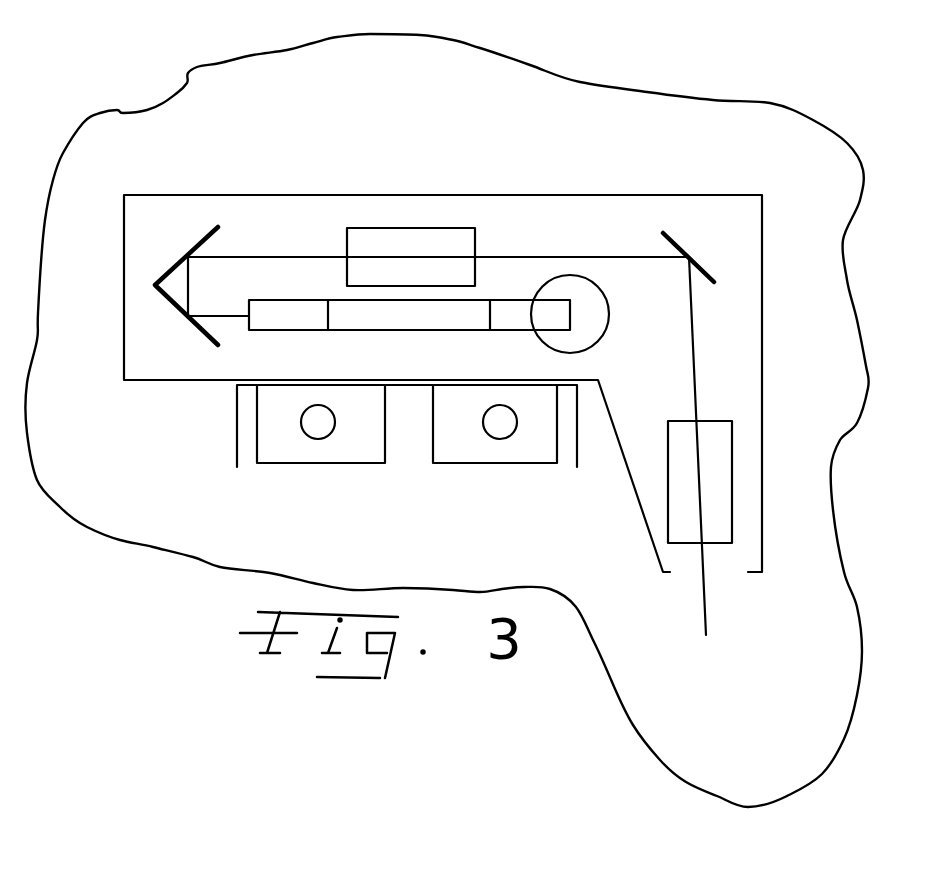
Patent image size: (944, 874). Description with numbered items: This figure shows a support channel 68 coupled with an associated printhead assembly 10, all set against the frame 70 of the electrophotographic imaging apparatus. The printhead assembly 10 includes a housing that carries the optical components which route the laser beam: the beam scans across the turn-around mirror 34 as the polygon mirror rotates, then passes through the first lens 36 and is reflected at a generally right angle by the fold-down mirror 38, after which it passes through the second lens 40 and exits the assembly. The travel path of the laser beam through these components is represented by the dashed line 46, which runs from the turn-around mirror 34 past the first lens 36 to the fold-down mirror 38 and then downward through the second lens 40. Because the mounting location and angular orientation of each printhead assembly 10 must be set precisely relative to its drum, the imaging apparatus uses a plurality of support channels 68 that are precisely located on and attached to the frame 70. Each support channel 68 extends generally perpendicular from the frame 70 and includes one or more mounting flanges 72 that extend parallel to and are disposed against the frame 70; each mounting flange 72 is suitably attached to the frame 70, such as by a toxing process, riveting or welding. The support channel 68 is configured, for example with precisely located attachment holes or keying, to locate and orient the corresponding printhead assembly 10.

The printhead assembly 10 is at (469, 186).
The turn-around mirror 34 is at (207, 237).
The first lens 36 is at (382, 227).
The fold-down mirror 38 is at (680, 240).
The second lens 40 is at (732, 442).
The laser beam travel path 46 is at (705, 603).
The support channel 68 is at (233, 432).
The frame 70 is at (587, 82).
The mounting flange 72 is at (360, 467).